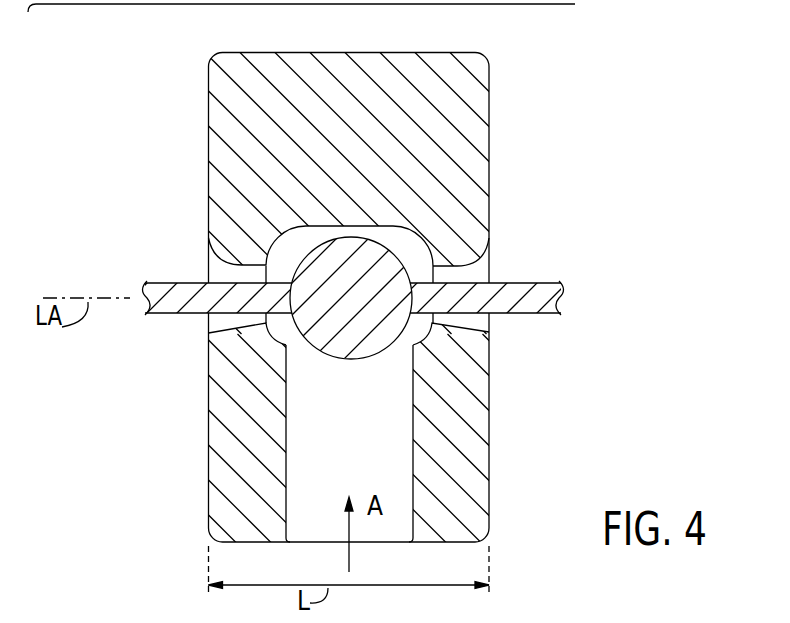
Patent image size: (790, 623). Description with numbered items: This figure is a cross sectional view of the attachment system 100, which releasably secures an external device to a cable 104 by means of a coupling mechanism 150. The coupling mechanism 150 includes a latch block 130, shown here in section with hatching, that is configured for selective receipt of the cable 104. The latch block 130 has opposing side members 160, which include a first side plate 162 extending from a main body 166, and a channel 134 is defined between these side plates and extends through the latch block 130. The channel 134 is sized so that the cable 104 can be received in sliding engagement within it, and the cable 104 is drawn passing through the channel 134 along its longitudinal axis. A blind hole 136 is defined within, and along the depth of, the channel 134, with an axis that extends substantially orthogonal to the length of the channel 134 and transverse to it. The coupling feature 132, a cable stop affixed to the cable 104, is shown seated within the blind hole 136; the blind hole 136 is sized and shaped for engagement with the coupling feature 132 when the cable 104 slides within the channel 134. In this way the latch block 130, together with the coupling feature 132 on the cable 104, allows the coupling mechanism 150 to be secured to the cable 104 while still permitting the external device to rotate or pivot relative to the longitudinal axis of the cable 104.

The attachment system 100 is at (77, 155).
The cable 104 is at (188, 293).
The latch block 130 is at (472, 171).
The coupling feature 132 is at (366, 262).
The channel 134 is at (250, 437).
The blind hole 136 is at (313, 511).
The coupling mechanism 150 is at (247, 42).
The opposing side members 160 is at (455, 473).
The first side plate 162 is at (570, 473).
The main body 166 is at (232, 133).